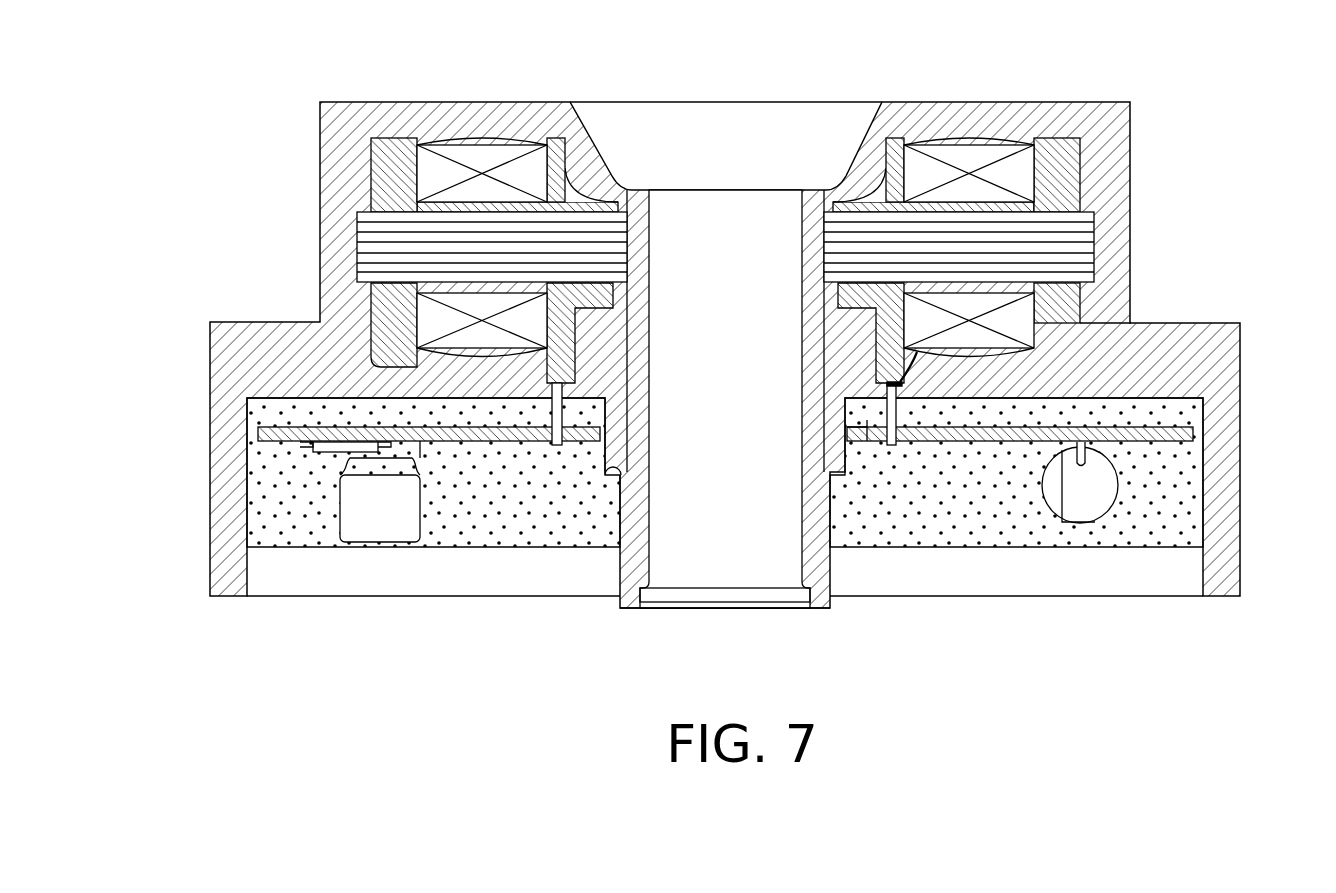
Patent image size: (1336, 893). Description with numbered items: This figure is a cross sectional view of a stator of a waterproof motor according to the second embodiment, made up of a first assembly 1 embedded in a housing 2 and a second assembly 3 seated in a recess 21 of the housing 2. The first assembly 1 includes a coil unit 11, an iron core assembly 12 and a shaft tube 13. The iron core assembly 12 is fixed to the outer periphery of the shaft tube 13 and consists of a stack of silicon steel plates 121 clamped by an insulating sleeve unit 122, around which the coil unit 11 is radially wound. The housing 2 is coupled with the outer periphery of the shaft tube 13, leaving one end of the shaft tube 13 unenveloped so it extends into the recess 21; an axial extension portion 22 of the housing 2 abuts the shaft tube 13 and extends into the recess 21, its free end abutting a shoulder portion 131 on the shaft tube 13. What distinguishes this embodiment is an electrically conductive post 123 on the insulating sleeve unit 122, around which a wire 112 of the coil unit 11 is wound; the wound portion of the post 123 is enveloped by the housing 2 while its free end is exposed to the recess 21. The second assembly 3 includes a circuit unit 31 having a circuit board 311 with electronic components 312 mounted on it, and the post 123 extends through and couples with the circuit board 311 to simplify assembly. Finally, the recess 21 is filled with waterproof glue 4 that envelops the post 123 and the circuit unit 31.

The first assembly 1 is at (348, 141).
The coil unit 11 is at (976, 160).
The iron core assembly 12 is at (1198, 70).
The silicon steel plates 121 is at (1087, 249).
The insulating sleeve unit 122 is at (1062, 177).
The shaft tube 13 is at (808, 233).
The shoulder portion 131 is at (612, 476).
The wire 112 is at (913, 358).
The post 123 is at (893, 417).
The housing 2 is at (1187, 337).
The recess 21 is at (1096, 588).
The axial extension portion 22 is at (835, 433).
The second assembly 3 is at (1166, 448).
The circuit unit 31 is at (120, 394).
The circuit board 311 is at (291, 433).
The electronic components 312 is at (347, 493).
The waterproof glue 4 is at (1007, 518).